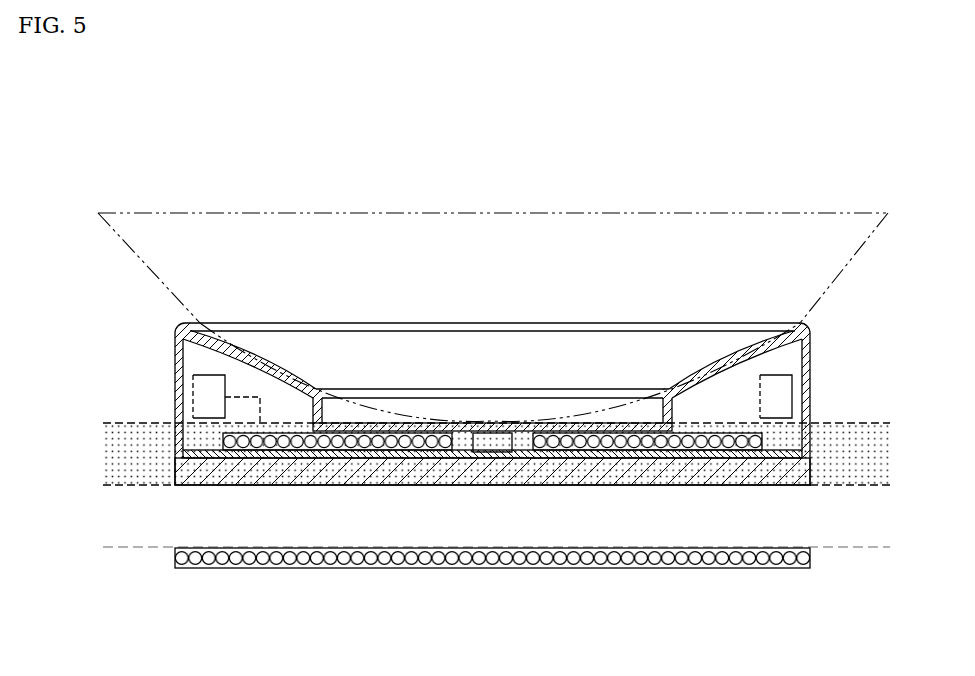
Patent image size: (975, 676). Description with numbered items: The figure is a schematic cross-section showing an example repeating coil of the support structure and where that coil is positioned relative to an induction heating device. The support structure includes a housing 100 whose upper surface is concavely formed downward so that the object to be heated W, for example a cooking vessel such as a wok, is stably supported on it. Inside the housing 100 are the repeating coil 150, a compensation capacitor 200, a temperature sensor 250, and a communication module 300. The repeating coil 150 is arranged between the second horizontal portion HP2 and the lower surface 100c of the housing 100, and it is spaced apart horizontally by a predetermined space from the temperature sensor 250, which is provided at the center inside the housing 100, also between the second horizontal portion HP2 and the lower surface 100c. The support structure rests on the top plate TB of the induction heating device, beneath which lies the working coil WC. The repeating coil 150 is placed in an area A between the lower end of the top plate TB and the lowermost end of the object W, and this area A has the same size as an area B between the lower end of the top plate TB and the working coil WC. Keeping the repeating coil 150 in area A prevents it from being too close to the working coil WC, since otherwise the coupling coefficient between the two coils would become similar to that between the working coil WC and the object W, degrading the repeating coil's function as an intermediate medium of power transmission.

The housing 100 is at (165, 338).
The lower surface 100c is at (193, 458).
The repeating coil 150 is at (352, 447).
The compensation capacitor 200 is at (193, 395).
The temperature sensor 250 is at (490, 447).
The communication module 300 is at (792, 397).
The second horizontal portion HP2 is at (391, 425).
The object to be heated W is at (628, 213).
The working coil WC is at (408, 558).
The top plate TB is at (615, 473).
The area A is at (107, 423).
The area B is at (107, 485).